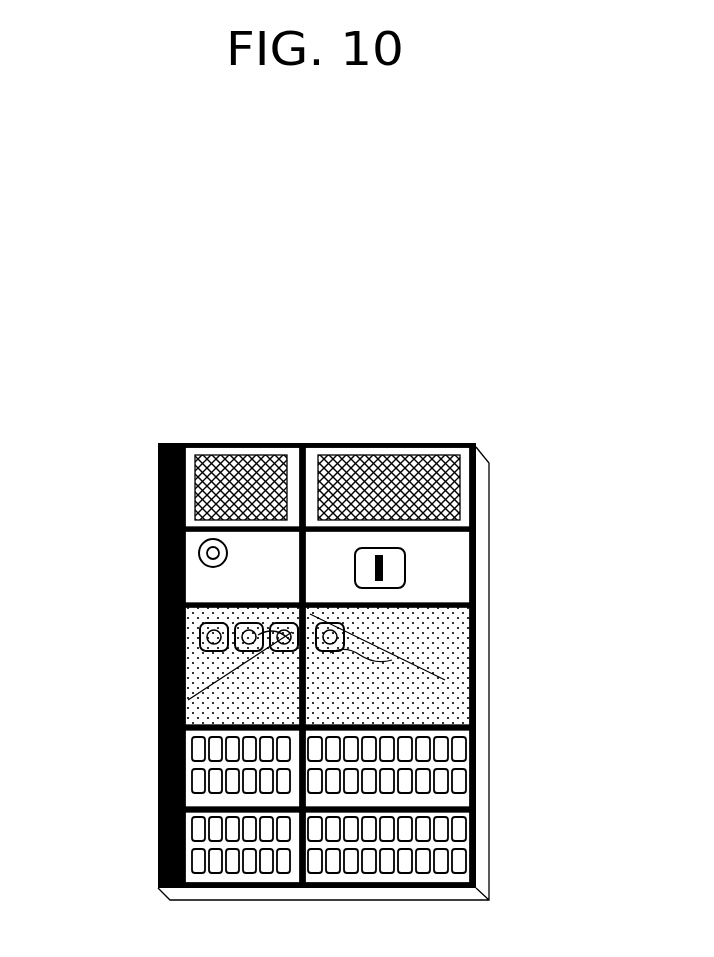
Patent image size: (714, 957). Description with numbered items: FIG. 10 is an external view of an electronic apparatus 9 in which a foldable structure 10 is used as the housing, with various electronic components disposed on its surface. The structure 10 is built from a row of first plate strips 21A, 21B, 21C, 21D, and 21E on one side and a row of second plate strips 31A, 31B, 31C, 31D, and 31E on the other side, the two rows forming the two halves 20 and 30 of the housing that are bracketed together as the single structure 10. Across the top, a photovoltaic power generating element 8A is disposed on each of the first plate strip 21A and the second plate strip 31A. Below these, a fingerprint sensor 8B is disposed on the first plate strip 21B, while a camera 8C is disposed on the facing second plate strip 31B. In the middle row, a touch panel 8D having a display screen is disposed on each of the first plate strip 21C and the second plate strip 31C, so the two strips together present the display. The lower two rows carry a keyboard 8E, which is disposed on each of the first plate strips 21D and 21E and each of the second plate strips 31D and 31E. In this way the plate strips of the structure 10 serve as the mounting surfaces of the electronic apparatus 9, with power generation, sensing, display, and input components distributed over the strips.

The electronic apparatus 9 is at (369, 282).
The structure 10 is at (437, 339).
The left display unit 30 is at (238, 428).
The right display unit 20 is at (392, 428).
The second plate strip 31A is at (222, 463).
The second plate strip 31B is at (197, 584).
The second plate strip 31C is at (192, 676).
The second plate strip 31D is at (190, 760).
The second plate strip 31E is at (190, 835).
The first plate strip 21A is at (478, 446).
The first plate strip 21B is at (458, 548).
The first plate strip 21C is at (489, 622).
The first plate strip 21D is at (478, 754).
The first plate strip 21E is at (478, 830).
The photovoltaic power generating element 8A is at (212, 497).
The fingerprint sensor 8B is at (405, 582).
The camera 8C is at (218, 547).
The touch panel 8D is at (445, 680).
The keyboard 8E is at (415, 818).